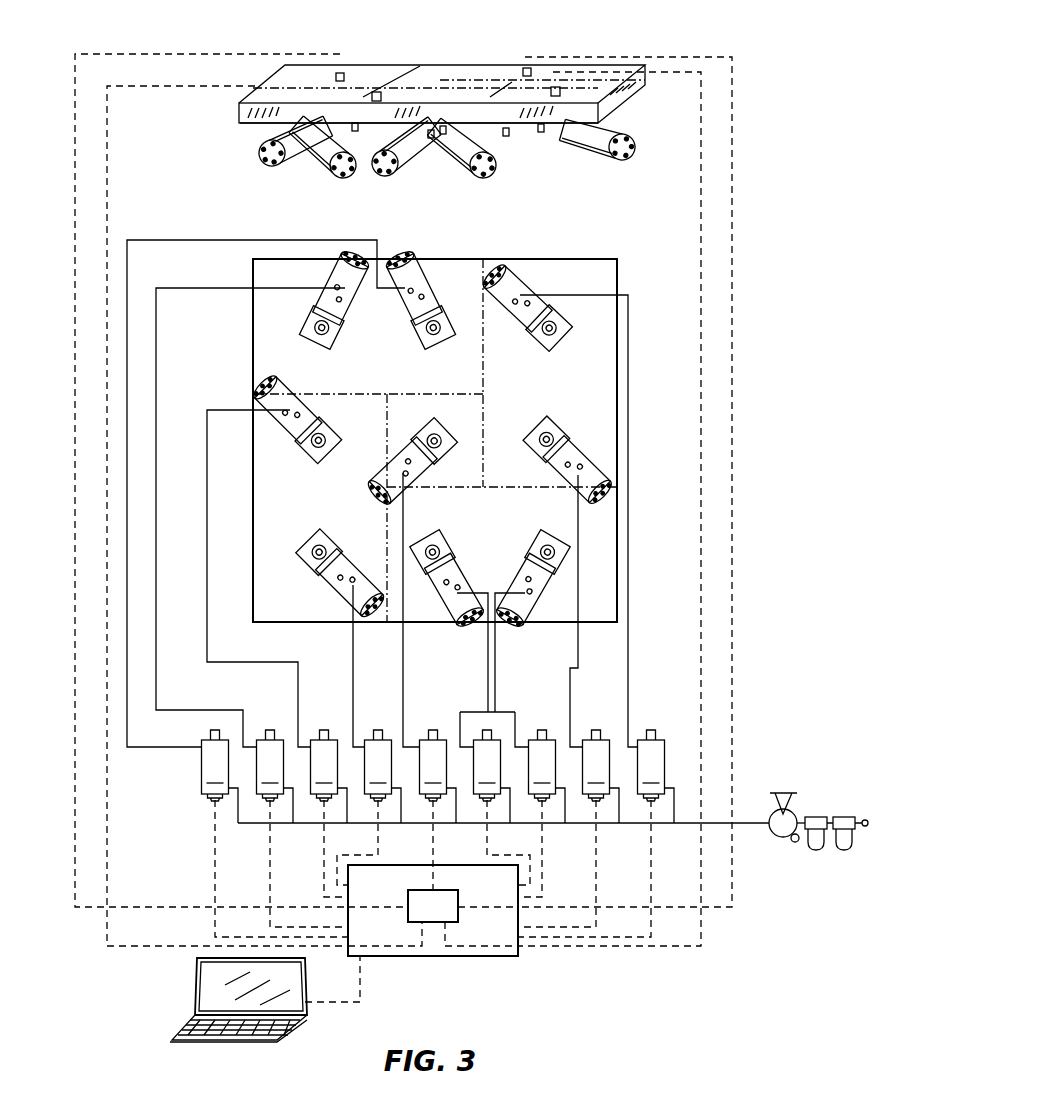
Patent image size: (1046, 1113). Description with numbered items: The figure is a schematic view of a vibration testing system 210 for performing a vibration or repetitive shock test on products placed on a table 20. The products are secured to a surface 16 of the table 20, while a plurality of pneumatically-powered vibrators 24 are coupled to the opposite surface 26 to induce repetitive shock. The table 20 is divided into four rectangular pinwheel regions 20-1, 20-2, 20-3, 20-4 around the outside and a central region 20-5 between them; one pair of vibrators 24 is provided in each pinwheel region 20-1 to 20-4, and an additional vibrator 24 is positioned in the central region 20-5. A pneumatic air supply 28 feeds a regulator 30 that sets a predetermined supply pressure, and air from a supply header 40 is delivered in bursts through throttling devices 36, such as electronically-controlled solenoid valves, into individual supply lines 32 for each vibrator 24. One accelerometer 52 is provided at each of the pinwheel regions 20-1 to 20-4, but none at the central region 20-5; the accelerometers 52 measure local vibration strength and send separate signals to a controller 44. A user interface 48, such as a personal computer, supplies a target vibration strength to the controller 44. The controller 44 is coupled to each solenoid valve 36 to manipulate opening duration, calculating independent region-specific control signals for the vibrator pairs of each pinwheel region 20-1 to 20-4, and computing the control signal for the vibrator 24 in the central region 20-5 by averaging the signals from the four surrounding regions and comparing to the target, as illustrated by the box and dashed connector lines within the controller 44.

The surface 16 is at (250, 88).
The table frame 20 is at (242, 111).
The surface 26 is at (247, 126).
The accelerometer 52 is at (375, 92).
The vibrator 24 is at (288, 165).
The pinwheel region 20-1 is at (298, 508).
The pinwheel region 20-2 is at (472, 542).
The pinwheel region 20-3 is at (360, 382).
The pinwheel region 20-4 is at (528, 388).
The central region 20-5 is at (437, 480).
The supply line 32 is at (207, 548).
The throttling device 36 is at (438, 776).
The supply header 40 is at (752, 824).
The regulator 30 is at (783, 793).
The pneumatic air supply 28 is at (844, 817).
The controller 44 is at (510, 956).
The user interface 48 is at (197, 982).
The vibration testing system 210 is at (786, 165).